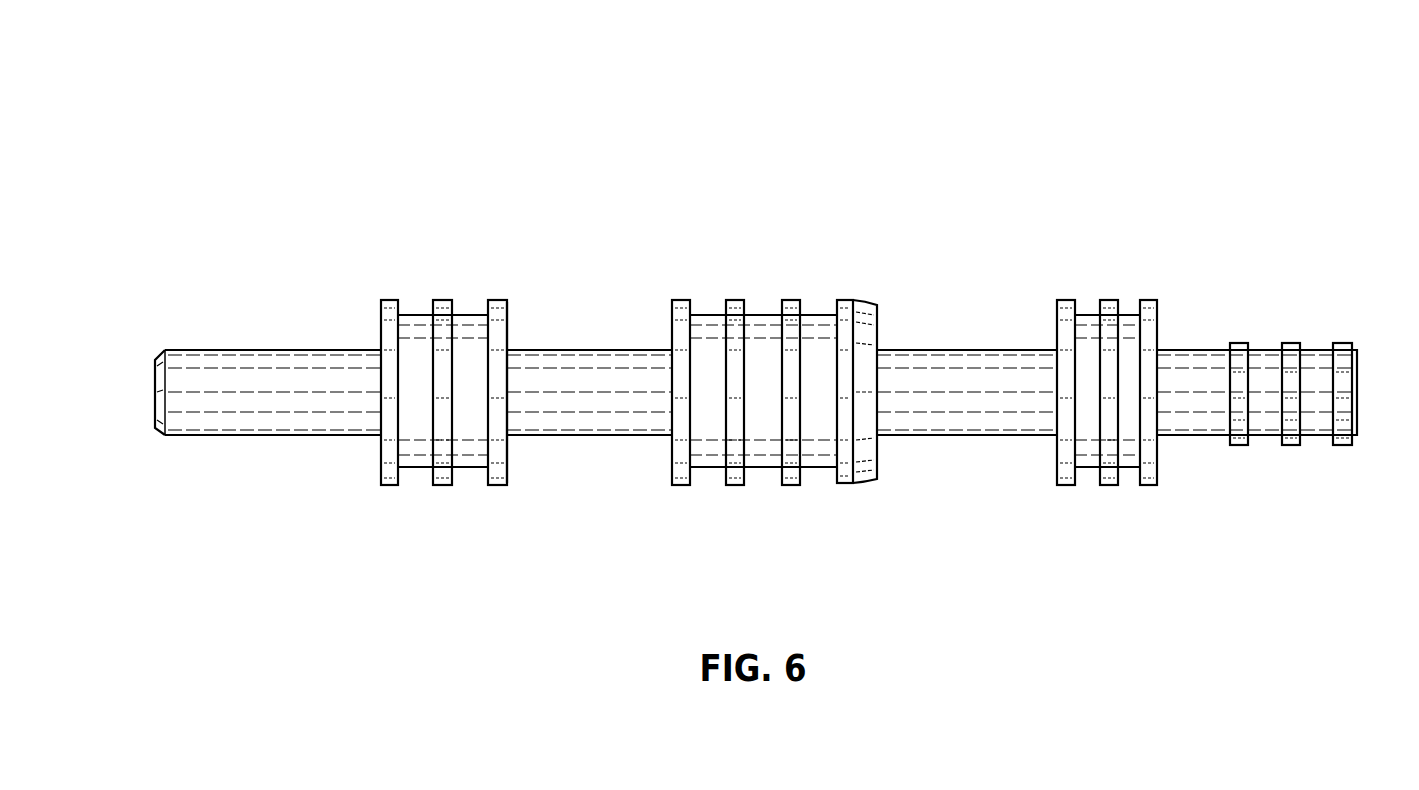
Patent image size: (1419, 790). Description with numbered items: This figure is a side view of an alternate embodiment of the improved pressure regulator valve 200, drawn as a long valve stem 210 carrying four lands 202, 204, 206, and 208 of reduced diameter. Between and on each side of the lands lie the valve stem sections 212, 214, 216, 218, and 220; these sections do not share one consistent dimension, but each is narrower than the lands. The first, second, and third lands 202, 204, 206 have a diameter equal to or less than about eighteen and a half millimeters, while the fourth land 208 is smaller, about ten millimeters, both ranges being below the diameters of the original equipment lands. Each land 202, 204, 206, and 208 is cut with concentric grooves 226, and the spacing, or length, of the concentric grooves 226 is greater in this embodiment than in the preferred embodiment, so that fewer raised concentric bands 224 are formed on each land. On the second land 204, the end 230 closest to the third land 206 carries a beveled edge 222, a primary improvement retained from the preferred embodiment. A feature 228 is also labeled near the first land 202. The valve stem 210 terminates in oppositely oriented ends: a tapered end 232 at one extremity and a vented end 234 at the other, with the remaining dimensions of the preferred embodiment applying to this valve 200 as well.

The pressure regulator valve 200 is at (988, 148).
The first land 202 is at (446, 290).
The second land 204 is at (772, 275).
The third land 206 is at (1130, 275).
The fourth land 208 is at (1290, 330).
The valve stem 210 is at (264, 348).
The valve stem section 212 is at (262, 435).
The valve stem section 214 is at (582, 435).
The valve stem section 216 is at (957, 435).
The valve stem section 218 is at (1202, 435).
The valve stem section 220 is at (1355, 435).
The beveled edge 222 is at (860, 483).
The raised concentric band 224 is at (488, 485).
The concentric groove 226 is at (413, 467).
The flange outer face 228 is at (508, 317).
The end of the second land 230 is at (880, 318).
The tapered end 232 is at (132, 375).
The vented end 234 is at (1371, 385).